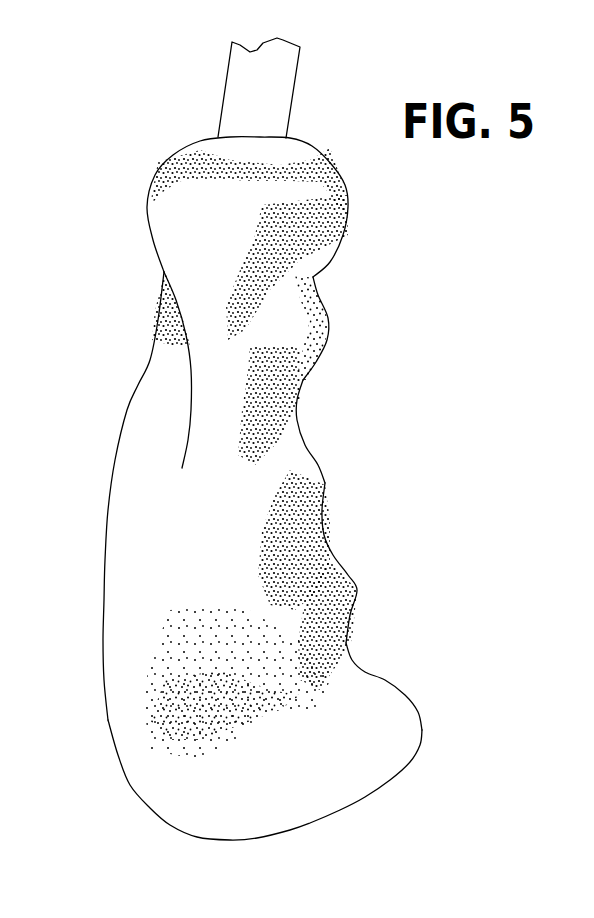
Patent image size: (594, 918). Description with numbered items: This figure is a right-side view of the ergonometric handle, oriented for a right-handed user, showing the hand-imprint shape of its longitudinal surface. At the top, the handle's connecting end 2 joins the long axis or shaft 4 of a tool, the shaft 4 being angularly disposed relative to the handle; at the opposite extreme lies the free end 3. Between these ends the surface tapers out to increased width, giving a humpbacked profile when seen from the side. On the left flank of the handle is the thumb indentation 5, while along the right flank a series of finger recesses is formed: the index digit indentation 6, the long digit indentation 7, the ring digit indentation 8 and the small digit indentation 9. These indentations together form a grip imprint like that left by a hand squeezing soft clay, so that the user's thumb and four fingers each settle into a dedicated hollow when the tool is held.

The connecting end 2 is at (311, 134).
The free end 3 is at (352, 829).
The shaft 4 is at (265, 106).
The thumb indentation 5 is at (132, 330).
The index digit indentation 6 is at (310, 243).
The long digit indentation 7 is at (303, 380).
The ring digit indentation 8 is at (313, 503).
The small digit indentation 9 is at (347, 643).